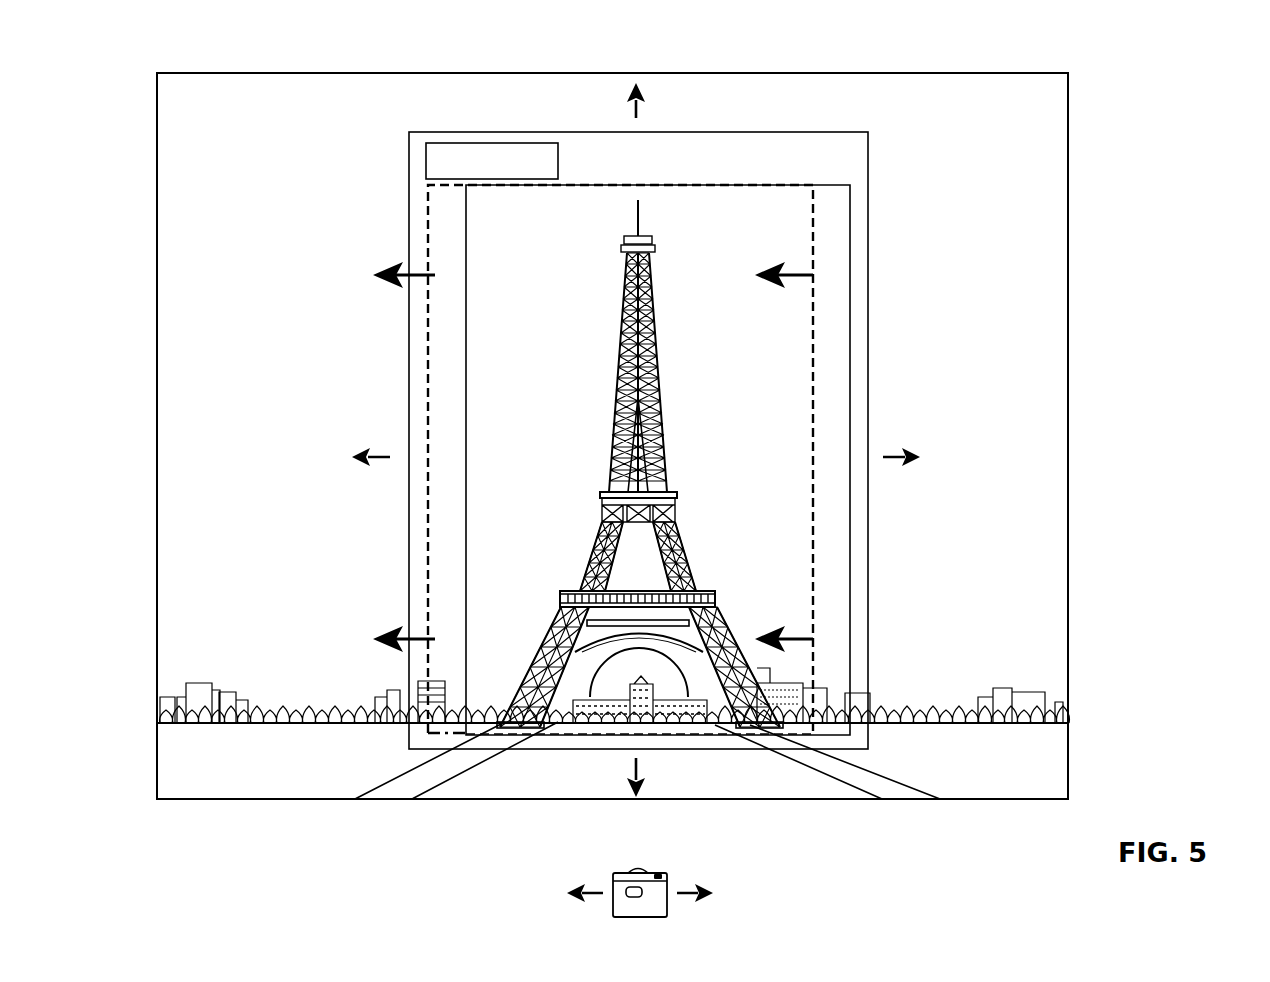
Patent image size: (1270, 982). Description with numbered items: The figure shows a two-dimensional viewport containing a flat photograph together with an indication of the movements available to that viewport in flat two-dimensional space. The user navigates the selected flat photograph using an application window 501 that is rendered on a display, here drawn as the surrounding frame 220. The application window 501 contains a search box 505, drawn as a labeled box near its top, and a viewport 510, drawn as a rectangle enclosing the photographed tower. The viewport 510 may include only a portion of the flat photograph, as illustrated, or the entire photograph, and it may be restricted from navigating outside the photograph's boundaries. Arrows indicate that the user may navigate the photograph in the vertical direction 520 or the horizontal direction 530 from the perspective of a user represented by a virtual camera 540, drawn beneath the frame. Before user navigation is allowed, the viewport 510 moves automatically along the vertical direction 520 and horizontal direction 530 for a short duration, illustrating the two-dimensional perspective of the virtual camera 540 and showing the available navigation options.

The display screen image 220 is at (972, 50).
The application window 501 is at (400, 126).
The search box 505 is at (510, 143).
The viewport 510 is at (462, 650).
The vertical direction 520 is at (640, 106).
The horizontal direction 530 is at (390, 457).
The virtual camera 540 is at (633, 868).